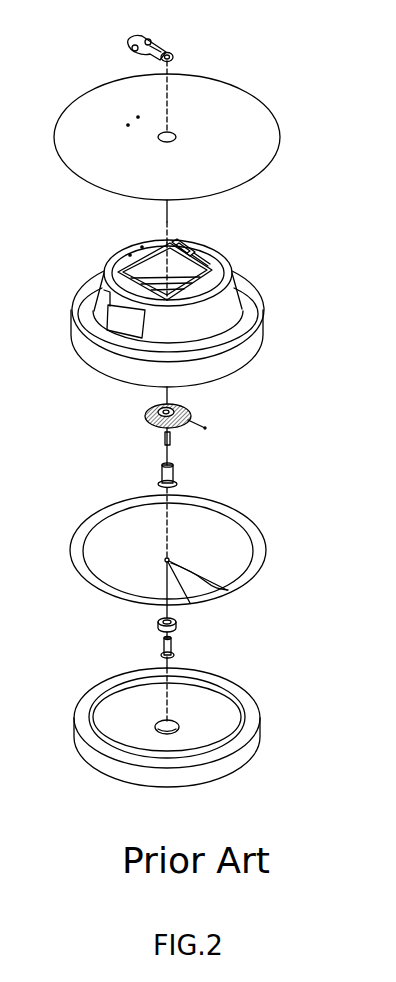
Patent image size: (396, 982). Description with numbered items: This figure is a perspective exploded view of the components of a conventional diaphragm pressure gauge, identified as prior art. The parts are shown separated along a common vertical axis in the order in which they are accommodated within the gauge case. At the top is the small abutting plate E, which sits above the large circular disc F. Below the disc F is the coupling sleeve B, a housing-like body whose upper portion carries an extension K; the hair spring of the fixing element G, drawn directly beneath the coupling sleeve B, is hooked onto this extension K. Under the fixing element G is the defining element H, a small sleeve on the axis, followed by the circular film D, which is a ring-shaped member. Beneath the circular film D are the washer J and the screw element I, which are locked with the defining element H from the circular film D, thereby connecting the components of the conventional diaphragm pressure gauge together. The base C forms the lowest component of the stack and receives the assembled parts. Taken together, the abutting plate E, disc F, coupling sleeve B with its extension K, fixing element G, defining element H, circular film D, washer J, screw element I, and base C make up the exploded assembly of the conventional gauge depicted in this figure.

The abutting plate E is at (174, 54).
The disc F is at (260, 131).
The extension K is at (192, 244).
The coupling sleeve B is at (257, 285).
The fixing element G is at (190, 410).
The defining element H is at (174, 477).
The circular film D is at (266, 540).
The washer J is at (177, 622).
The screw element I is at (173, 646).
The base C is at (258, 718).